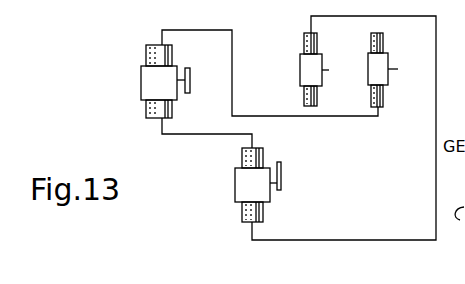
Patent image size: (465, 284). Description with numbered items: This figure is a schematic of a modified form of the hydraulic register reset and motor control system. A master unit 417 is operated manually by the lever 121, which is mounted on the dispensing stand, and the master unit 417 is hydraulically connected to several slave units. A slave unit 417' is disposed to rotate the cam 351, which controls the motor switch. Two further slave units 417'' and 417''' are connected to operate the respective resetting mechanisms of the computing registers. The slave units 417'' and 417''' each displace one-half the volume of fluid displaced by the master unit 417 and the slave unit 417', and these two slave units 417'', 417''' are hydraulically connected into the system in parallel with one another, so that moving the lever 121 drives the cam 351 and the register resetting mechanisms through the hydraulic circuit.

The master unit 417 is at (231, 185).
The slave unit 417' is at (121, 81).
The slave unit 417'' is at (284, 62).
The slave unit 417''' is at (402, 89).
The cam 351 is at (188, 68).
The lever 121 is at (281, 162).